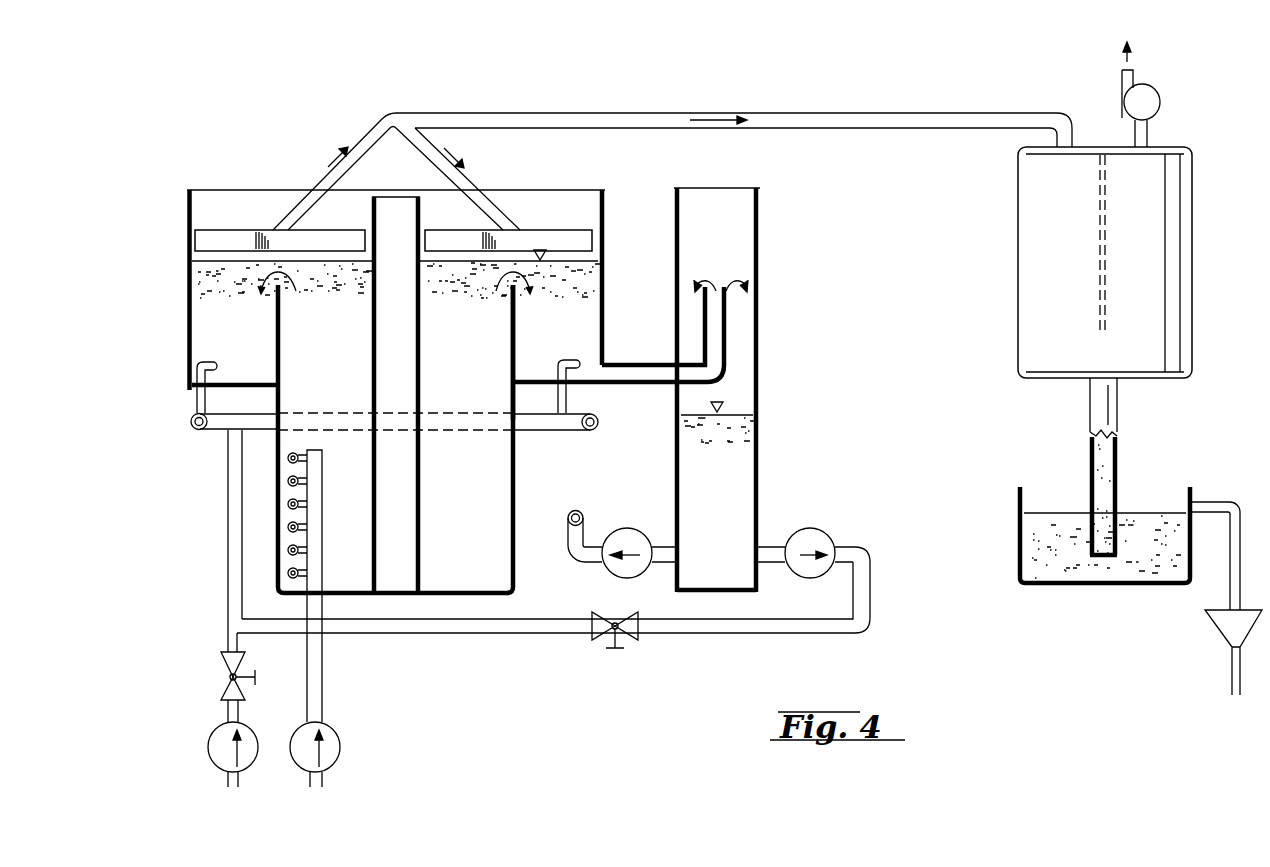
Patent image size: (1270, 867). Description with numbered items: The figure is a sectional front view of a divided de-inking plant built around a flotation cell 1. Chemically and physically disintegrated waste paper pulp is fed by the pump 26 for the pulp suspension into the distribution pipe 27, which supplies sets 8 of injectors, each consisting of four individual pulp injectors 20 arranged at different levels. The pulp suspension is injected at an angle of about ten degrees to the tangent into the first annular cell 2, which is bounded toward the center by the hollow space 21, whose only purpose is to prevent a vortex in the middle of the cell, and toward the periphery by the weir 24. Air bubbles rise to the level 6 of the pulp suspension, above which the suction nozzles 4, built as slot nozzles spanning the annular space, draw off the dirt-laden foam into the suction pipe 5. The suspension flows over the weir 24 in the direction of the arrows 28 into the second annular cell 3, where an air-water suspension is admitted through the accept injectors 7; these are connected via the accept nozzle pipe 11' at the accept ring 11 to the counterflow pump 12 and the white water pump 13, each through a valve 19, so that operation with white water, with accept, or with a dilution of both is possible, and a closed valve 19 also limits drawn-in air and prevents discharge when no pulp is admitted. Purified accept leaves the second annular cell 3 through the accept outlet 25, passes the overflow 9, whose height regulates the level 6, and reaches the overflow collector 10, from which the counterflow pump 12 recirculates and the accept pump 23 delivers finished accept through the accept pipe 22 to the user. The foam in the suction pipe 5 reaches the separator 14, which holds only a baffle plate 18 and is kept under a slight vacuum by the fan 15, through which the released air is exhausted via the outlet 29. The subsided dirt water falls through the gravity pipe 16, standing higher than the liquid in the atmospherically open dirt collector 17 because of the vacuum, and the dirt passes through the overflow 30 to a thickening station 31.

The flotation cell 1 is at (222, 186).
The first annular cell 2 is at (395, 439).
The second annular cell 3 is at (216, 336).
The suction nozzles 4 is at (259, 240).
The suction pipe 5 is at (560, 113).
The level of the pulp suspension 6 is at (458, 262).
The accept injectors 7 is at (214, 363).
The sets of injectors 8 is at (290, 503).
The overflow 9 is at (717, 284).
The overflow collector 10 is at (745, 382).
The accept ring 11 is at (389, 447).
The accept nozzle pipe 11' is at (394, 405).
The counterflow pump 12 is at (820, 538).
The white water pump 13 is at (222, 735).
The separator 14 is at (1025, 248).
The fan 15 is at (1155, 110).
The gravity pipe 16 is at (1095, 413).
The dirt collector 17 is at (1032, 535).
The baffle plate 18 is at (1100, 285).
The valve 19 is at (220, 669).
The pulp injectors 20 is at (293, 455).
The hollow space 21 is at (410, 392).
The accept pipe 22 is at (577, 553).
The accept pump 23 is at (638, 540).
The weir 24 is at (510, 300).
The accept outlet 25 is at (602, 378).
The pump for the pulp suspension 26 is at (342, 749).
The distribution pipe 27 is at (320, 468).
The arrows 28 is at (297, 289).
The exhaust outlet 29 is at (1122, 82).
The overflow 30 is at (1190, 500).
The thickening station 31 is at (1225, 628).